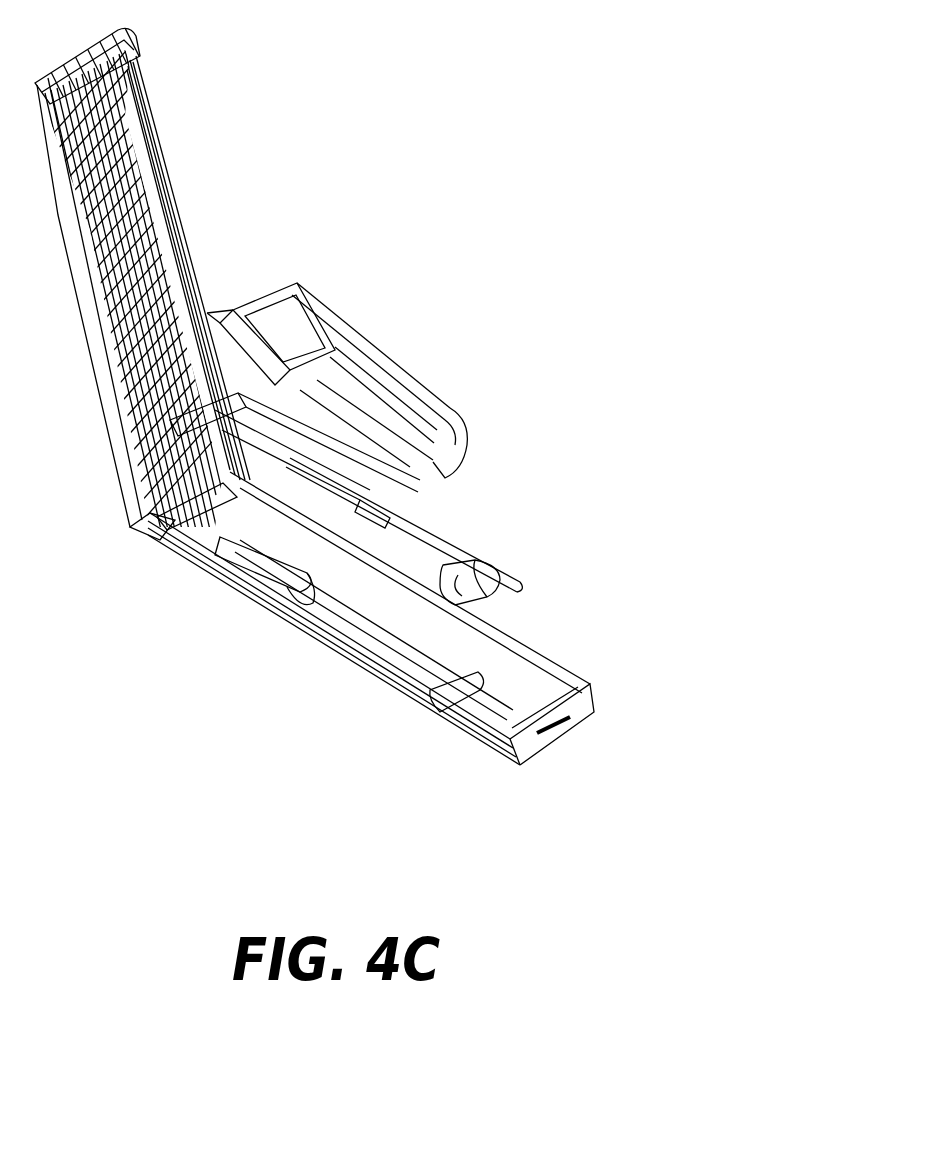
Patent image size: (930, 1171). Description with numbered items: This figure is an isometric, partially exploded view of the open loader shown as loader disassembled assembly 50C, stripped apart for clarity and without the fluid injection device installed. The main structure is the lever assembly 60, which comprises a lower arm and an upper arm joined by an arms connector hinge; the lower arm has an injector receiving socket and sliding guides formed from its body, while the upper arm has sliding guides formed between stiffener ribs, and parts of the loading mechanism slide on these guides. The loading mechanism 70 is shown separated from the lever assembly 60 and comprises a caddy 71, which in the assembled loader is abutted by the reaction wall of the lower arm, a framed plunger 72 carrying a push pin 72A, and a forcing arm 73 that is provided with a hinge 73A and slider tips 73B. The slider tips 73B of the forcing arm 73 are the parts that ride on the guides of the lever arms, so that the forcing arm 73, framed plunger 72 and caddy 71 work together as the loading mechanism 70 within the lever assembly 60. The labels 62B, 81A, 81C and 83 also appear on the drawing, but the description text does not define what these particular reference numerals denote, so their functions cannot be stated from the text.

The loader disassembled assembly 50C is at (503, 106).
The lever assembly 60 is at (148, 95).
The column rail 62B is at (167, 197).
The loading mechanism 70 is at (445, 337).
The caddy 71 is at (520, 580).
The framed plunger 72 is at (380, 498).
The push pin 72A is at (395, 520).
The forcing arm 73 is at (317, 313).
The hinge 73A is at (445, 482).
The slider tips 73B is at (270, 278).
The base tray end 81A is at (500, 655).
The base side wall 81C is at (218, 587).
The column-base joint 83 is at (147, 530).